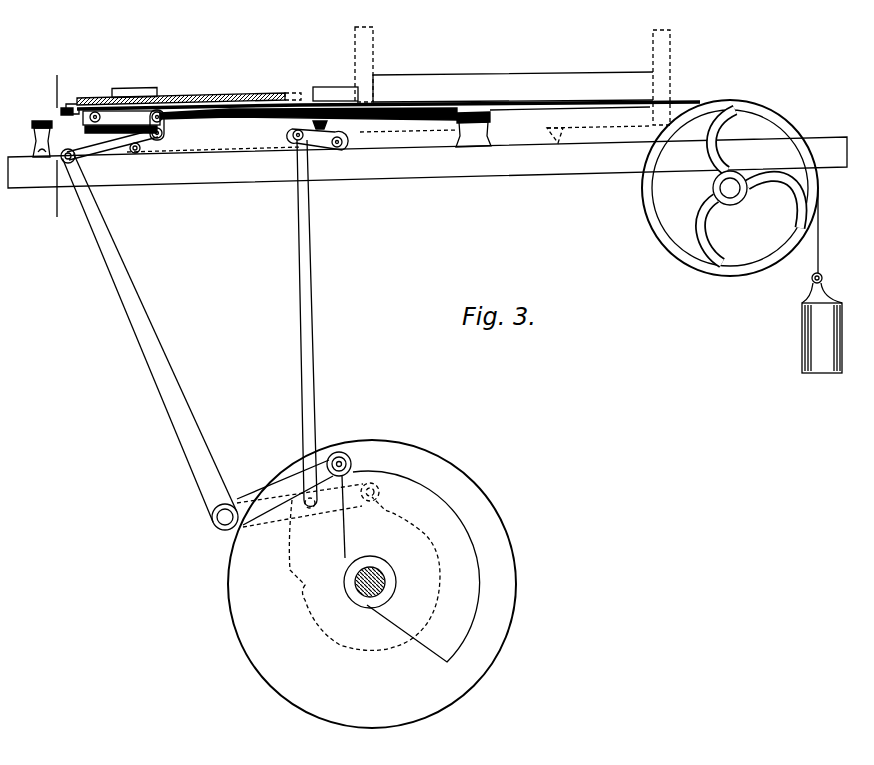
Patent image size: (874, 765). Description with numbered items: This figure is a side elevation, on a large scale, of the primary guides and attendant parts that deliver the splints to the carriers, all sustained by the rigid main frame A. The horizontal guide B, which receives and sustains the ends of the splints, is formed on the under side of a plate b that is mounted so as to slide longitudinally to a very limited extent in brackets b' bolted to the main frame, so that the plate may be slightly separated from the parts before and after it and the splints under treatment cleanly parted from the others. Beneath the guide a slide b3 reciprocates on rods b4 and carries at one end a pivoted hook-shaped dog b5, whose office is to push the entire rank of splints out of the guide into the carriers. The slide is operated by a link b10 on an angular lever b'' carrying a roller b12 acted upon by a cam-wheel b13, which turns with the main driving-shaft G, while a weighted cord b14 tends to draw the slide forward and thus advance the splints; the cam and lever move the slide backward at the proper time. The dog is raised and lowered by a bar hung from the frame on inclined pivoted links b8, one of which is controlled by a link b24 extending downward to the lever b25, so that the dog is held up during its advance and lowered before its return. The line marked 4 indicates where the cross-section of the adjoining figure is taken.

The main frame A is at (427, 162).
The horizontal guide B is at (366, 109).
The main driving-shaft G is at (386, 584).
The section line 4 4 is at (55, 148).
The plate b is at (189, 92).
The brackets b' is at (235, 86).
The angular lever b'' is at (151, 342).
The slide b3 is at (165, 130).
The rods b4 is at (69, 148).
The hook-shaped dog b5 is at (69, 102).
The inclined pivoted links b8 is at (140, 152).
The link b10 is at (120, 152).
The roller b12 is at (343, 455).
The cam-wheel b13 is at (454, 503).
The weighted cord b14 is at (553, 96).
The link b24 is at (306, 283).
The lever b25 is at (305, 505).